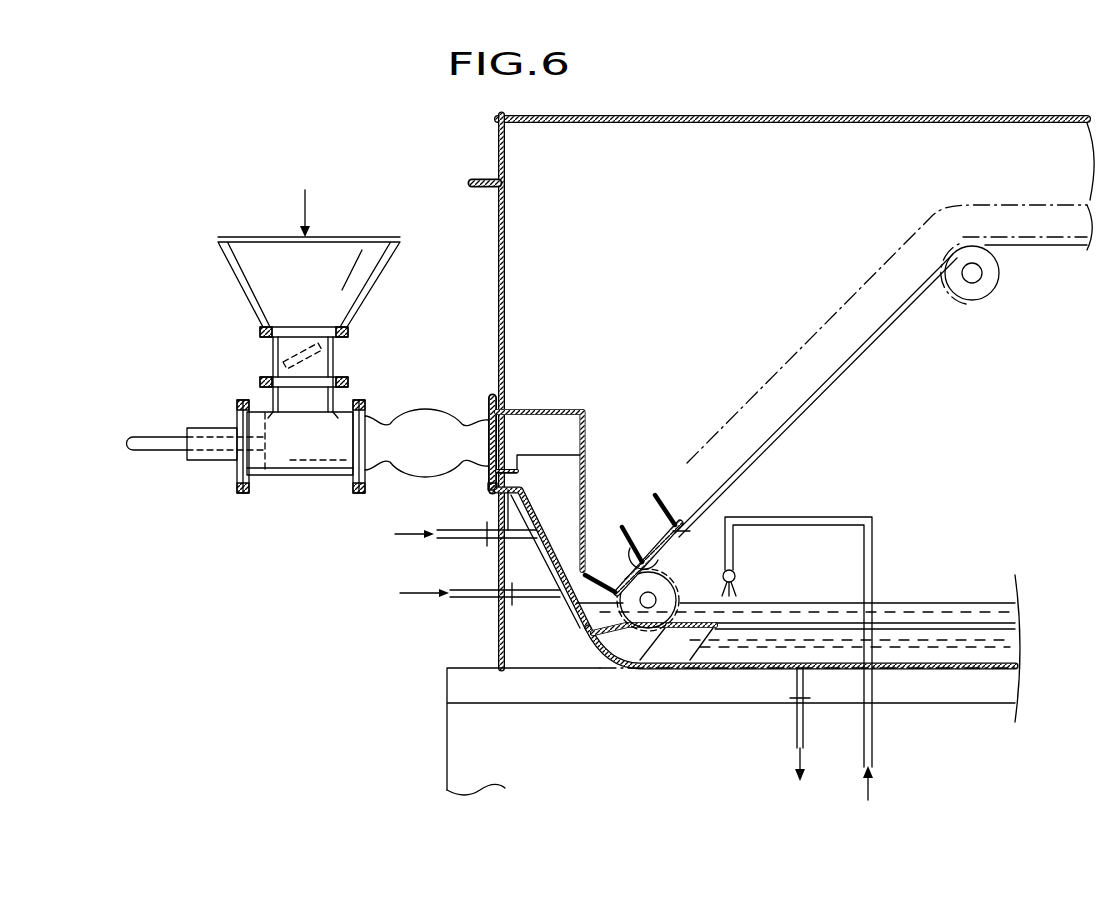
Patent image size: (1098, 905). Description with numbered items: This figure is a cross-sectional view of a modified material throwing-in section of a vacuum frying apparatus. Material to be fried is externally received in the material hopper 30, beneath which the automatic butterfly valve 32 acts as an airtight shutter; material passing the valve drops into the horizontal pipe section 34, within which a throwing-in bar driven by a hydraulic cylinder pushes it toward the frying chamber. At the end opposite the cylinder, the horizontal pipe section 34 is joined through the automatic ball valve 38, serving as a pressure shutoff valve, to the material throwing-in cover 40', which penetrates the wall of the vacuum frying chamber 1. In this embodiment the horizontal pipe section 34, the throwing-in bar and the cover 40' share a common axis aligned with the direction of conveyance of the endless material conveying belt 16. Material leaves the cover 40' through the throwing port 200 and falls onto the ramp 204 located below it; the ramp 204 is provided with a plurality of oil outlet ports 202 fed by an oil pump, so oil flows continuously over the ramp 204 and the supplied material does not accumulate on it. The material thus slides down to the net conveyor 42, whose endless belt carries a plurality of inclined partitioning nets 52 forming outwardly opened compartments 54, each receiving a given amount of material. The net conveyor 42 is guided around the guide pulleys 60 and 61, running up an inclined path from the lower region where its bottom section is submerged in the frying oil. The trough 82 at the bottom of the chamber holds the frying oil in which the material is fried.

The vacuum frying chamber 1 is at (999, 114).
The endless material conveying belt 16 is at (890, 317).
The material hopper 30 is at (255, 285).
The automatic butterfly valve 32 is at (272, 355).
The horizontal pipe section 34 is at (297, 472).
The automatic ball valve 38 is at (425, 410).
The material throwing-in cover 40' is at (548, 455).
The net conveyor 42 is at (712, 518).
The partitioning nets 52 is at (667, 495).
The compartments 54 is at (648, 527).
The guide pulley 60 is at (990, 280).
The guide pulley 61 is at (665, 613).
The trough 82 is at (750, 668).
The throwing port 200 is at (490, 418).
The oil outlet ports 202 is at (545, 585).
The ramp 204 is at (520, 520).